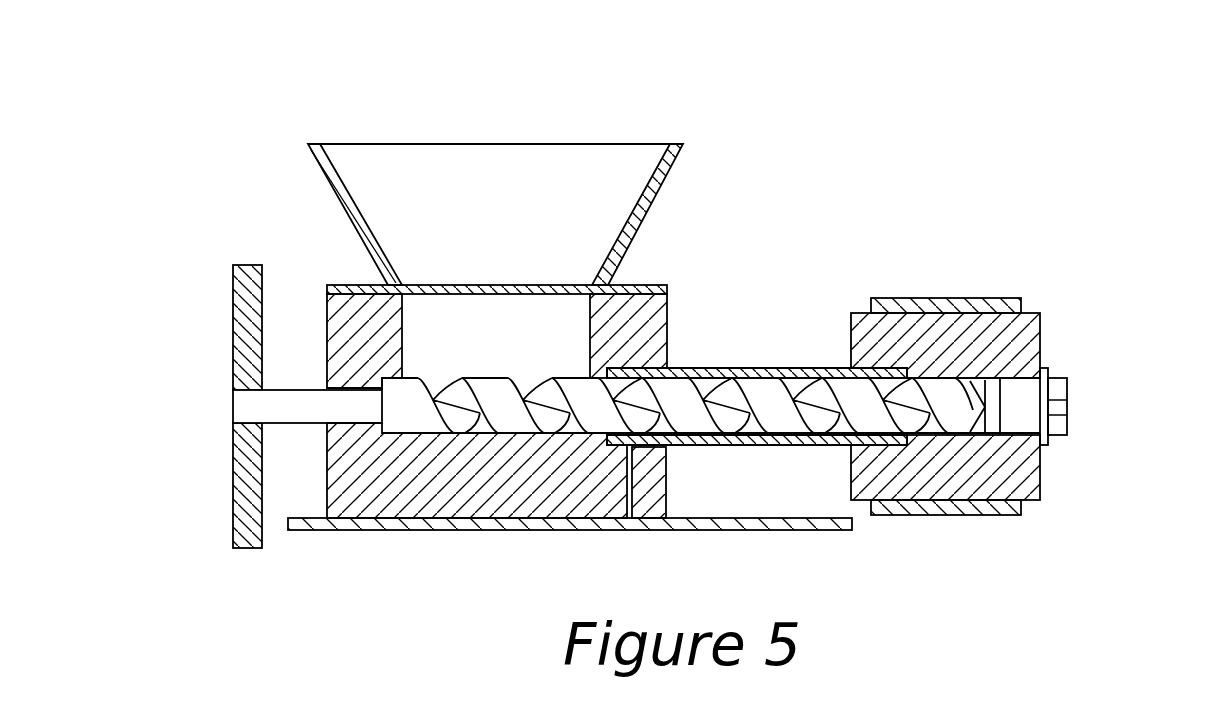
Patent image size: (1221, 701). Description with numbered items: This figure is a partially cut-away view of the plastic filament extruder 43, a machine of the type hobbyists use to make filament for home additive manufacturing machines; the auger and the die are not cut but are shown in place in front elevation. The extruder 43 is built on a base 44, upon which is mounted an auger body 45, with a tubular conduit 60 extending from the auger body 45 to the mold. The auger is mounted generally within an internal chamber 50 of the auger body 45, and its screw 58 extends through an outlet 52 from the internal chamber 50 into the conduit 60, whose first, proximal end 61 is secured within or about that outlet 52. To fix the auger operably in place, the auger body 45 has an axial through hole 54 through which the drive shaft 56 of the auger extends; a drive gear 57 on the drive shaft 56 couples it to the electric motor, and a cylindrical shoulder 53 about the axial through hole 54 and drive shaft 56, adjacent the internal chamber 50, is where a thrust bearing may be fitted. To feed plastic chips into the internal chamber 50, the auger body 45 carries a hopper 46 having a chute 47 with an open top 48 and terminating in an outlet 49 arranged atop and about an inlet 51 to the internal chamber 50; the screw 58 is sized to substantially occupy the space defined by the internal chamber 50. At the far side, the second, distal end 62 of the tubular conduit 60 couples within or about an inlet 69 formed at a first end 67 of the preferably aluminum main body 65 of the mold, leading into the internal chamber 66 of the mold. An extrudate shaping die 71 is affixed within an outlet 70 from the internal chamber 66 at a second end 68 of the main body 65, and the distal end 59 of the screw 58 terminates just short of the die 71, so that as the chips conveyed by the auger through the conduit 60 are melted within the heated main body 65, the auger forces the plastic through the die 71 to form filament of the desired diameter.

The extruder 43 is at (928, 123).
The base 44 is at (700, 524).
The auger body 45 is at (406, 146).
The hopper 46 is at (506, 146).
The chute 47 is at (638, 173).
The open top 48 is at (373, 125).
The outlet 49 is at (452, 260).
The internal chamber 50 is at (471, 291).
The inlet 51 is at (482, 315).
The outlet 52 is at (578, 369).
The cylindrical shoulder 53 is at (380, 383).
The axial through hole 54 is at (343, 427).
The drive shaft 56 is at (245, 407).
The drive gear 57 is at (242, 335).
The screw 58 is at (743, 457).
The distal end 59 is at (963, 428).
The tubular conduit 60 is at (705, 367).
The proximal end 61 is at (630, 455).
The distal end 62 is at (872, 452).
The main body 65 is at (365, 492).
The internal chamber 66 is at (923, 428).
The first end 67 is at (848, 363).
The second end 68 is at (988, 365).
The inlet 69 is at (876, 368).
The outlet 70 is at (996, 396).
The extrudate shaping die 71 is at (1030, 403).